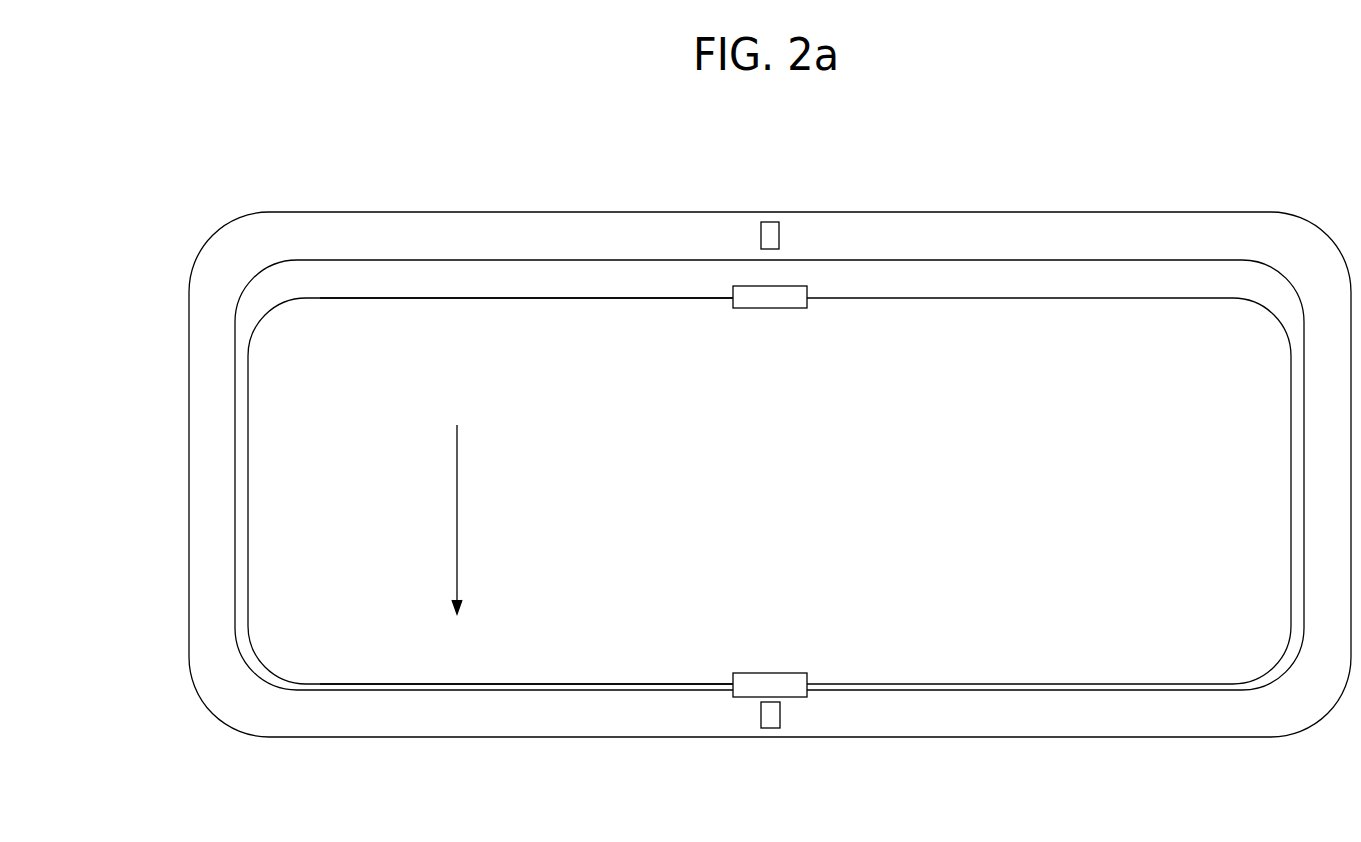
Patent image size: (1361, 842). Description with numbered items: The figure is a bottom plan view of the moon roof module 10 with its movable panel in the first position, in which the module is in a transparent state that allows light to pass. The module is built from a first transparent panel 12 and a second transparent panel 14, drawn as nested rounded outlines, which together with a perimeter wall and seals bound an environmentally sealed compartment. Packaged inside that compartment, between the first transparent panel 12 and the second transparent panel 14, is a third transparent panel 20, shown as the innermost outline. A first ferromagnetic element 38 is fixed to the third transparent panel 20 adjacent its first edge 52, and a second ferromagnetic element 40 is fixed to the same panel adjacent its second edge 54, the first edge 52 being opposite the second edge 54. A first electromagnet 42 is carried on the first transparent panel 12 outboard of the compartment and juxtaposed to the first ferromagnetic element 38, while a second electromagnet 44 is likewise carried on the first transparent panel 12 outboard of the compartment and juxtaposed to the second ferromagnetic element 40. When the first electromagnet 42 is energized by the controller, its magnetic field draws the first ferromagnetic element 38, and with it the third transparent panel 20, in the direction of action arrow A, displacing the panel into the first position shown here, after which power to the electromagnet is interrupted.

The moon roof module 10 is at (739, 448).
The first transparent panel 12 is at (257, 311).
The second transparent panel 14 is at (265, 226).
The third transparent panel 20 is at (1030, 325).
The first ferromagnetic element 38 is at (790, 676).
The second ferromagnetic element 40 is at (793, 292).
The first electromagnet 42 is at (770, 715).
The second electromagnet 44 is at (772, 235).
The first edge 52 is at (577, 688).
The second edge 54 is at (608, 298).
The action arrow A is at (459, 525).